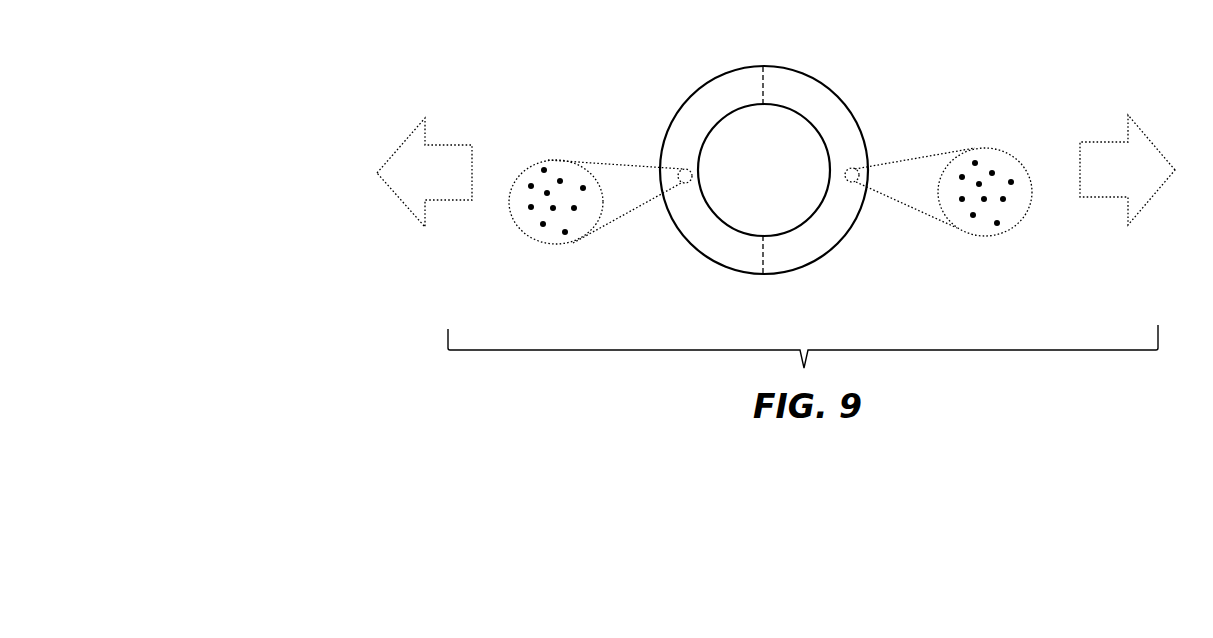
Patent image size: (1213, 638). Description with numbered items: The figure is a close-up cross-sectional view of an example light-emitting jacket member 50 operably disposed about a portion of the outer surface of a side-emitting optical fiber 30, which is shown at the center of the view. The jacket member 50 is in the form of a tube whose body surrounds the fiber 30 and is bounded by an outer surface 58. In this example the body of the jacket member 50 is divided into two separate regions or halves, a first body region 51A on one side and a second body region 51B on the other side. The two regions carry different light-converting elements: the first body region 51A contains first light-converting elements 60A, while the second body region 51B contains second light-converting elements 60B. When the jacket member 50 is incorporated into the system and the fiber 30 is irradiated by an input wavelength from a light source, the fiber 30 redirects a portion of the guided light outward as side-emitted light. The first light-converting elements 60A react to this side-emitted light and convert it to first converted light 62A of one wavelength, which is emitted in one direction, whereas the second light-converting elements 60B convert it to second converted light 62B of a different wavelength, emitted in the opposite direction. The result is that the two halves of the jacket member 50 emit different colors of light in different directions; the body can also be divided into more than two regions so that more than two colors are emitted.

The side-emitting optical fiber 30 is at (750, 182).
The light-emitting jacket member 50 is at (679, 71).
The first body region 51A is at (691, 132).
The second body region 51B is at (851, 128).
The outer surface 58 is at (797, 69).
The first light-converting elements 60A is at (565, 234).
The second light-converting elements 60B is at (997, 225).
The first converted light 62A is at (400, 142).
The second converted light 62B is at (1149, 138).